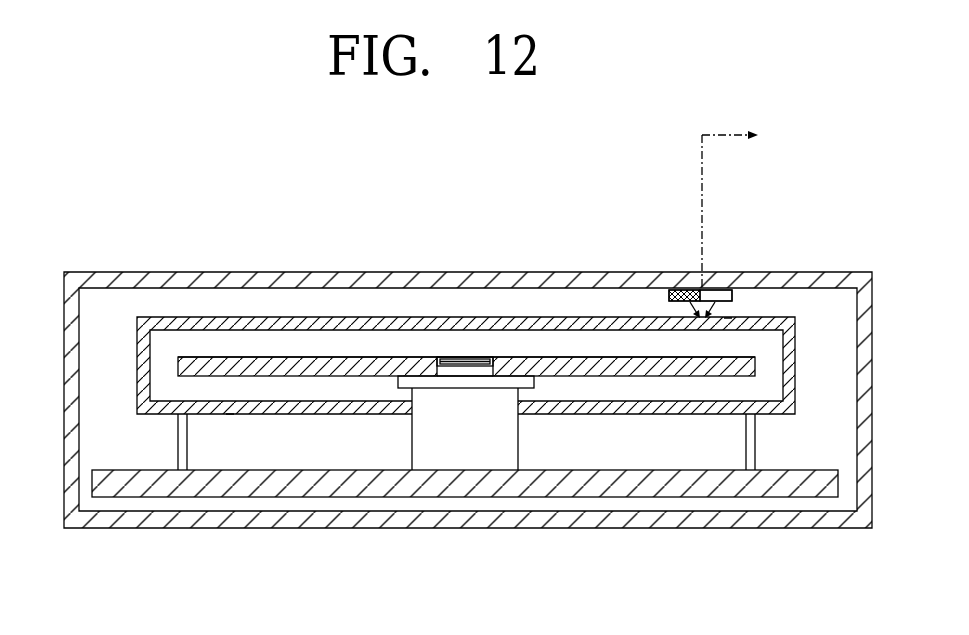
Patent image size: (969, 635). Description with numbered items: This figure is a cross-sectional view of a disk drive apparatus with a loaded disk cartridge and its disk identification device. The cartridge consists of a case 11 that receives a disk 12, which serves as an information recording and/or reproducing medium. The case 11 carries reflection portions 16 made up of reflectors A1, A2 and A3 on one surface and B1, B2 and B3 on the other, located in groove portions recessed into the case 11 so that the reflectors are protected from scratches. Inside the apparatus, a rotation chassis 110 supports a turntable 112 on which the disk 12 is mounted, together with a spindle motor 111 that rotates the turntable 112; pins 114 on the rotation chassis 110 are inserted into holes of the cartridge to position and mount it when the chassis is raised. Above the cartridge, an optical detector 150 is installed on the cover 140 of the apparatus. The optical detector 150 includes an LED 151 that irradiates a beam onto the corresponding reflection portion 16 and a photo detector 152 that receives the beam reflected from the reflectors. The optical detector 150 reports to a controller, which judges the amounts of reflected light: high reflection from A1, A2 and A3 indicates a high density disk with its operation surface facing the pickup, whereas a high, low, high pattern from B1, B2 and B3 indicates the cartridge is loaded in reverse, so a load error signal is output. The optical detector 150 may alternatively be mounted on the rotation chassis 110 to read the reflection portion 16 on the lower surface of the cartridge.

The case 11 is at (650, 318).
The disk 12 is at (590, 357).
The reflection portions 16 is at (230, 414).
The rotation chassis 110 is at (626, 490).
The spindle motor 111 is at (470, 455).
The turntable 112 is at (408, 362).
The pins 114 is at (177, 437).
The cover 140 is at (481, 277).
The optical detector 150 is at (707, 286).
The LED 151 is at (690, 290).
The photo detector 152 is at (723, 290).